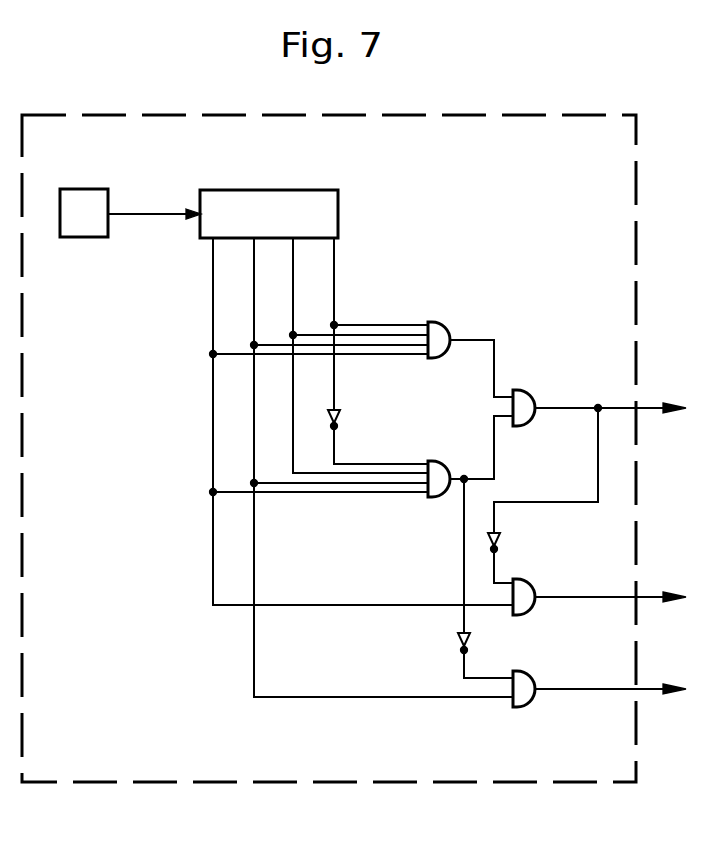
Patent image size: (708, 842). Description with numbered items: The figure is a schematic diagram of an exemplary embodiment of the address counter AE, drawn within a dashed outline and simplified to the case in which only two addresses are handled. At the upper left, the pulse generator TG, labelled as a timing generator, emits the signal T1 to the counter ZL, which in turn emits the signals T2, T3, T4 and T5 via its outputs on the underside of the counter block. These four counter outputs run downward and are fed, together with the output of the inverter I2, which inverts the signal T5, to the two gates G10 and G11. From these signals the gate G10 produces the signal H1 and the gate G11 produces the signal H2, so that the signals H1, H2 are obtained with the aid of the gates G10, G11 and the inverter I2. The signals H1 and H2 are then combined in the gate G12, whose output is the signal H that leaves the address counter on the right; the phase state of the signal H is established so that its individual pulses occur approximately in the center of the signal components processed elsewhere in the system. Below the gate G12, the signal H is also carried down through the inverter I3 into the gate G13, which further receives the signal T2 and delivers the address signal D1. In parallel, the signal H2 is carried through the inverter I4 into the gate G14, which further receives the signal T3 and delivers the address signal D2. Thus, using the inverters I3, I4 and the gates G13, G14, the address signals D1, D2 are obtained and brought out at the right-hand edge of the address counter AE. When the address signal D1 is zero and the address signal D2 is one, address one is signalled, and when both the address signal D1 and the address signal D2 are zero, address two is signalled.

The address counter AE is at (450, 113).
The pulse generator TG is at (74, 177).
The counter ZL is at (255, 178).
The signal T1 is at (154, 201).
The signal T2 is at (349, 421).
The signal T3 is at (370, 467).
The signal T4 is at (347, 355).
The signal T5 is at (367, 324).
The inverter I2 is at (378, 431).
The inverter I3 is at (505, 552).
The inverter I4 is at (485, 580).
The gate G10 is at (434, 323).
The gate G11 is at (438, 463).
The gate G12 is at (520, 391).
The gate G13 is at (535, 582).
The gate G14 is at (530, 673).
The signal H1 is at (481, 353).
The signal H2 is at (481, 449).
The signal H is at (590, 454).
The address signal D1 is at (610, 584).
The address signal D2 is at (610, 676).